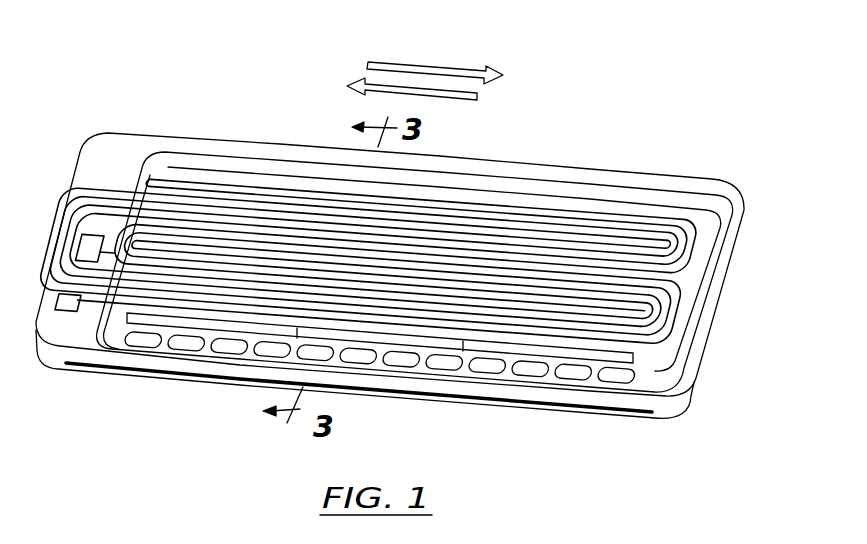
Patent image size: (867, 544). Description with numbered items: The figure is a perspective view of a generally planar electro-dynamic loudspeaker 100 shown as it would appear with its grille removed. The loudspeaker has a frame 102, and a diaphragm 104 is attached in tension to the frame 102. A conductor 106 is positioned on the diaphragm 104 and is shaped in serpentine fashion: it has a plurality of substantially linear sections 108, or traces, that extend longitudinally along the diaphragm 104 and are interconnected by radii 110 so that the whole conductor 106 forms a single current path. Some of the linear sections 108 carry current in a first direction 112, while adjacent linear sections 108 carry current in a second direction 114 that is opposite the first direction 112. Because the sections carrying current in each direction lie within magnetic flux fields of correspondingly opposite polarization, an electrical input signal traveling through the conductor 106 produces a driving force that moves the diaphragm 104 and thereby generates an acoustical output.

The electro-dynamic loudspeaker 100 is at (596, 116).
The frame 102 is at (98, 372).
The diaphragm 104 is at (139, 131).
The conductor 106 is at (655, 233).
The linear sections 108 is at (413, 283).
The radii 110 is at (693, 257).
The first direction 112 is at (448, 66).
The second direction 114 is at (473, 99).